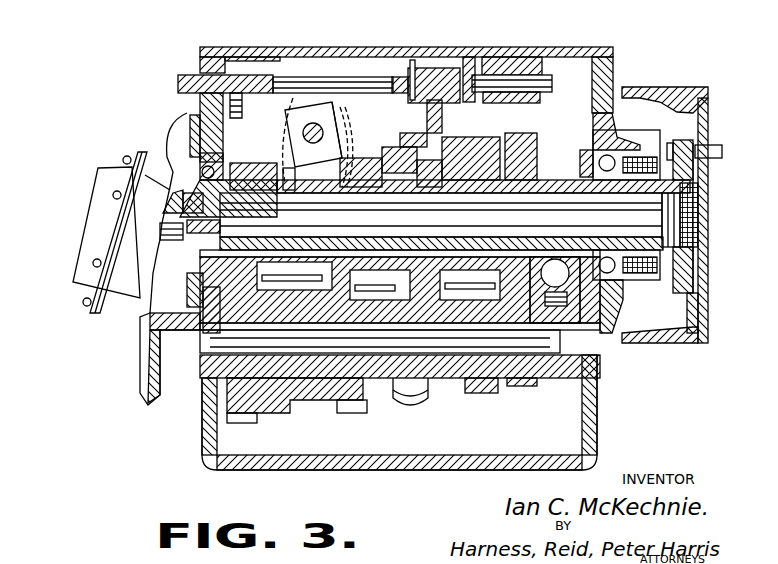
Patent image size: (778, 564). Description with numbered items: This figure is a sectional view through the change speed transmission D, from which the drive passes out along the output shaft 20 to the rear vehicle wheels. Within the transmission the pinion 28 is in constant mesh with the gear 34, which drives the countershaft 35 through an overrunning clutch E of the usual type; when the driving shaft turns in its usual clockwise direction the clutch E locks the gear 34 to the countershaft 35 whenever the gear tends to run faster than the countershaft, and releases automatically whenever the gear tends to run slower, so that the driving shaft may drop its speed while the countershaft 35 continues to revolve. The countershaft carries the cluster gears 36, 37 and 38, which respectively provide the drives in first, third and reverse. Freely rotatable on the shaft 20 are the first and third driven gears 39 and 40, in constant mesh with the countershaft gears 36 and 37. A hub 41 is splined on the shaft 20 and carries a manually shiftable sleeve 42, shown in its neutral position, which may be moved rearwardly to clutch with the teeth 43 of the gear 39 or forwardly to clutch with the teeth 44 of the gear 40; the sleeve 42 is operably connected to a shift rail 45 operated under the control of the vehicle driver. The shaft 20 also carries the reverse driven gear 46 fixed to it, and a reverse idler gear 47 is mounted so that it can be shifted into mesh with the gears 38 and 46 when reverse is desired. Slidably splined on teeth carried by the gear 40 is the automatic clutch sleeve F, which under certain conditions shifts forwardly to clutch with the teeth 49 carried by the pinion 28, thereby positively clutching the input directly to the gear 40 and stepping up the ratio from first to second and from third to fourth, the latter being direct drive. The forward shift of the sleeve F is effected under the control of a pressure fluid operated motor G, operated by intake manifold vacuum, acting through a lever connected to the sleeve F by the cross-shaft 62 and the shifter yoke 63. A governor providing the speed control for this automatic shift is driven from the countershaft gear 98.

The output shaft 20 is at (690, 180).
The pinion 28 is at (235, 163).
The gear 34 is at (240, 423).
The countershaft 35 is at (440, 395).
The cluster gear 36 is at (478, 395).
The cluster gear 37 is at (342, 413).
The cluster gear 38 is at (522, 388).
The first driven gear 39 is at (500, 140).
The third driven gear 40 is at (355, 158).
The hub 41 is at (443, 186).
The manually shiftable sleeve 42 is at (442, 137).
The teeth 43 is at (490, 142).
The teeth 44 is at (390, 150).
The shift rail 45 is at (308, 85).
The reverse driven gear 46 is at (530, 145).
The reverse idler gear 47 is at (553, 307).
The teeth 49 is at (288, 170).
The cross-shaft 62 is at (313, 123).
The shifter yoke 63 is at (338, 135).
The countershaft gear 98 is at (400, 322).
The speed ratio transmission D is at (345, 47).
The overrunning clutch E is at (290, 400).
The automatic clutch sleeve F is at (292, 135).
The pressure fluid operated motor G is at (113, 172).